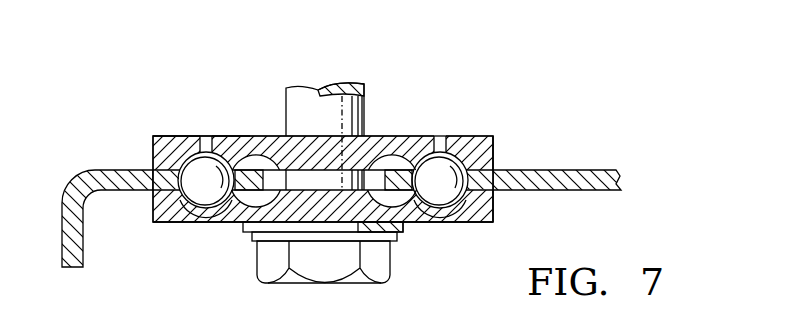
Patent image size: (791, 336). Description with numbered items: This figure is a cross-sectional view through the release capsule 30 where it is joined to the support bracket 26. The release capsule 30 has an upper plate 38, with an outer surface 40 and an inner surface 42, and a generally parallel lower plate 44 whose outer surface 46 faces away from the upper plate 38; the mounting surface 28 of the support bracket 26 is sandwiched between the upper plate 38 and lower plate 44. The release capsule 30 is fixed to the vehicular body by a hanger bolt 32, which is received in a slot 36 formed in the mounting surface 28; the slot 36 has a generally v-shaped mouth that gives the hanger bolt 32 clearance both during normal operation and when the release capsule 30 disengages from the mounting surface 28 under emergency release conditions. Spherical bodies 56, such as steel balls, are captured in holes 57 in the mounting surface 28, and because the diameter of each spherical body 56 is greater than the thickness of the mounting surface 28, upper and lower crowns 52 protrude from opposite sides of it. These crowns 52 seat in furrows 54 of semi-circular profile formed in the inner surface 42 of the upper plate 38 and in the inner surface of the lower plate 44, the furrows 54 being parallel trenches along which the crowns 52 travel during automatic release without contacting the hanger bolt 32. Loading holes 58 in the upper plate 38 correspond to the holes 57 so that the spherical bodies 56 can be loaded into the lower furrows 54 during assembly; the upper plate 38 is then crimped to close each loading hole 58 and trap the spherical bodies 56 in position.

The support bracket 26 is at (69, 171).
The mounting surface 28 is at (535, 170).
The release capsule 30 is at (497, 135).
The hanger bolt 32 is at (305, 88).
The slot 36 is at (377, 168).
The upper plate 38 is at (165, 136).
The outer surface 40 is at (247, 136).
The inner surface 42 is at (296, 172).
The lower plate 44 is at (162, 222).
The outer surface 46 is at (480, 222).
The crown 52 is at (207, 152).
The furrow 54 is at (180, 212).
The spherical body 56 is at (207, 190).
The hole 57 is at (181, 172).
The loading hole 58 is at (200, 136).